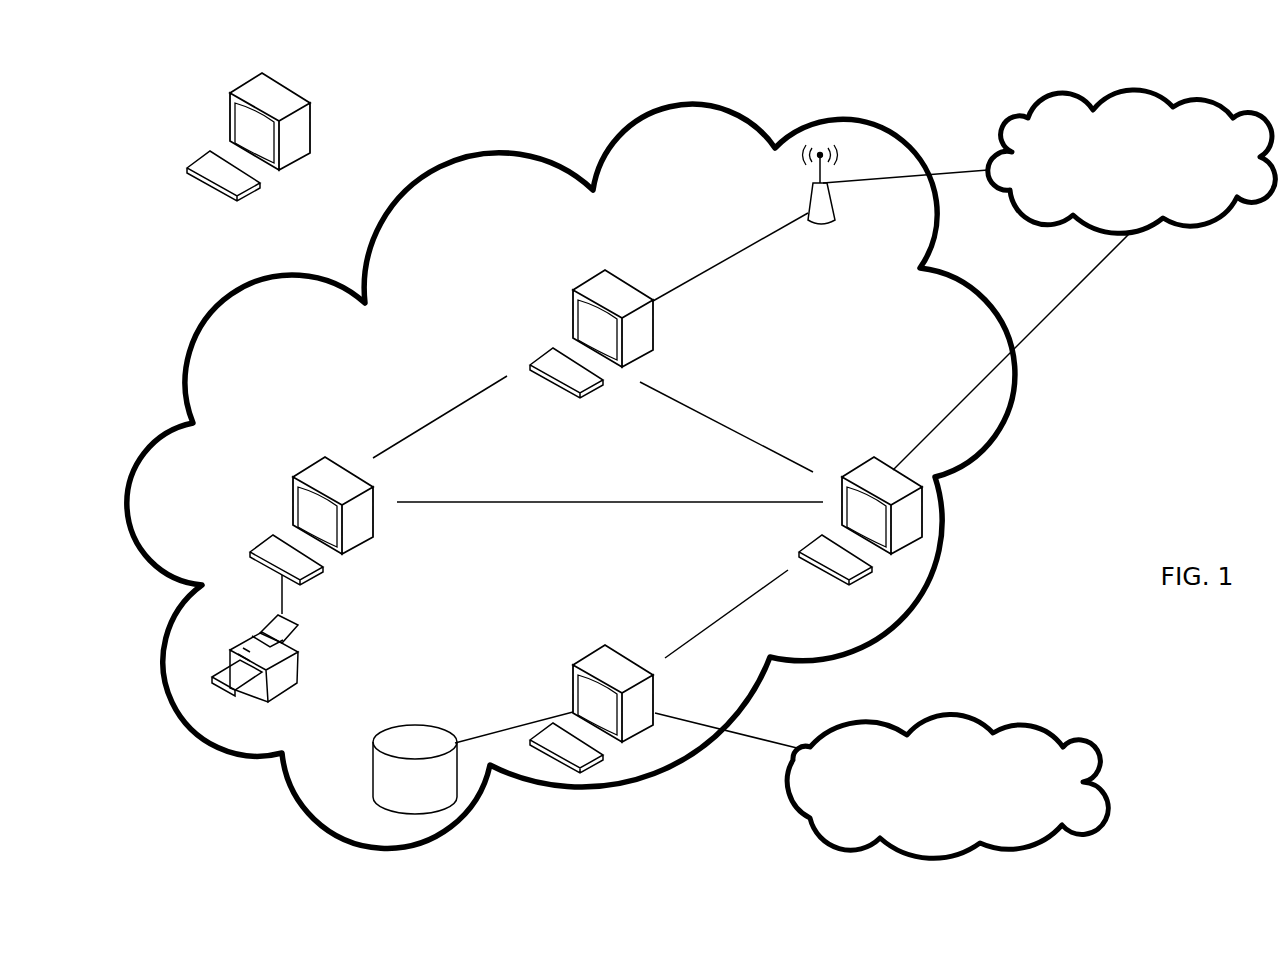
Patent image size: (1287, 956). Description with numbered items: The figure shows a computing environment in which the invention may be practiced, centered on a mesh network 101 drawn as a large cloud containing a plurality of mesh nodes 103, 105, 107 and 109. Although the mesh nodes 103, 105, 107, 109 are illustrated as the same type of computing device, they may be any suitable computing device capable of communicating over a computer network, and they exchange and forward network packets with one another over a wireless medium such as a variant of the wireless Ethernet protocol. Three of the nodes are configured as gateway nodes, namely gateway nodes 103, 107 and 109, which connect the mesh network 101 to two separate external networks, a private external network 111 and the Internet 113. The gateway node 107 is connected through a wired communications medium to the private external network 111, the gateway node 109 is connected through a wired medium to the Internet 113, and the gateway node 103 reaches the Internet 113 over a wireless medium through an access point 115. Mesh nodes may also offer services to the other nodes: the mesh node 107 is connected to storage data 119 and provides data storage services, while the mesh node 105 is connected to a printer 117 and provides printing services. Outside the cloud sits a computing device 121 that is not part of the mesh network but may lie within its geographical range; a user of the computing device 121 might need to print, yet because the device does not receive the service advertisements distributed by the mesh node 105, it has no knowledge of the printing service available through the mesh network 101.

The mesh network 101 is at (1010, 428).
The mesh node 103 is at (600, 278).
The mesh node 105 is at (292, 502).
The mesh node 107 is at (590, 662).
The mesh node 109 is at (860, 463).
The private external network 111 is at (983, 718).
The Internet 113 is at (1017, 113).
The access point 115 is at (808, 147).
The printer 117 is at (288, 672).
The storage data 119 is at (427, 730).
The computing device 121 is at (305, 95).